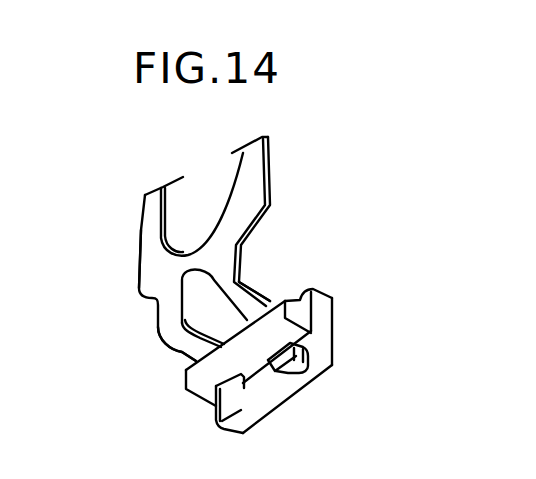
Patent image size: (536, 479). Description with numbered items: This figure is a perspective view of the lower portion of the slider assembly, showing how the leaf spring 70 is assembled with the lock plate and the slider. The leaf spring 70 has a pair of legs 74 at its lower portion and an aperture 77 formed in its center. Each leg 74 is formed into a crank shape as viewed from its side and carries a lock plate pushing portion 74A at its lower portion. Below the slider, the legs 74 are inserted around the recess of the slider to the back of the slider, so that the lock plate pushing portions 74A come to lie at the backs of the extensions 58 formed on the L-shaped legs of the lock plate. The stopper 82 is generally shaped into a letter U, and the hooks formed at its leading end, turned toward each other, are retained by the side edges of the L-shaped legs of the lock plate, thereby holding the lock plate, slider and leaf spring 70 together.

The leaf spring 70 is at (252, 190).
The aperture 77 is at (170, 238).
The legs 74 is at (254, 303).
The lock plate pushing portion 74A is at (290, 366).
The extension 58 is at (293, 372).
The stopper 82 is at (277, 398).